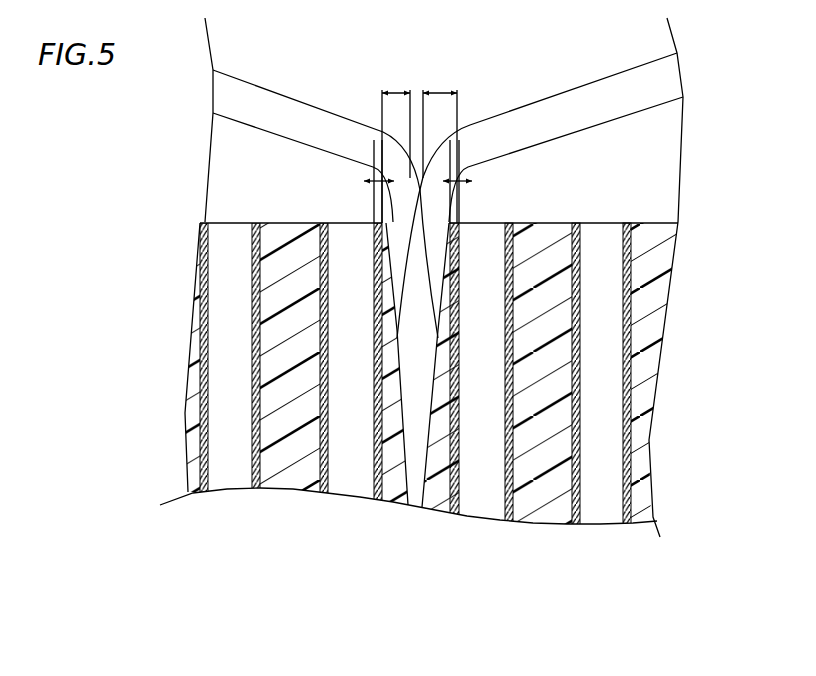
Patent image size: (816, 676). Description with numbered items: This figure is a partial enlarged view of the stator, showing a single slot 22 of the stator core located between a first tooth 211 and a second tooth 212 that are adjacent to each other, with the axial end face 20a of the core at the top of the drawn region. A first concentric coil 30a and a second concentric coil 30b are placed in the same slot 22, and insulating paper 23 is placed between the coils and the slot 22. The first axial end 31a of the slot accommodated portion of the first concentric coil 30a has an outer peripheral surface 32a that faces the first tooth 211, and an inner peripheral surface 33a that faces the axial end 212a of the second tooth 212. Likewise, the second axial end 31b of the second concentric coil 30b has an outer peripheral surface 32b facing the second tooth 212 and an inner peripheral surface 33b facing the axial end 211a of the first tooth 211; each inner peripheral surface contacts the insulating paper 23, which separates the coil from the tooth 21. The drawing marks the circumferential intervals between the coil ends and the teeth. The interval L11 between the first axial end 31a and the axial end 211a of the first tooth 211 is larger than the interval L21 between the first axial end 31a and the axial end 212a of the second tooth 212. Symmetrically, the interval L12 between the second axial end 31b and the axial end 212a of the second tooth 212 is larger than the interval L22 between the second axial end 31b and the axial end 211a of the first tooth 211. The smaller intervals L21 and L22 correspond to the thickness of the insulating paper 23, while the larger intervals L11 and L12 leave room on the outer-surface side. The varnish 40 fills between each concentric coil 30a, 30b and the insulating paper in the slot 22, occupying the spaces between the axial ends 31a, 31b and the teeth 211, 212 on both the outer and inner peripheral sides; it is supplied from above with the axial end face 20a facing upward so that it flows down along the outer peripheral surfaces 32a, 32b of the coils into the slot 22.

The axial end face of stator core 20a is at (605, 221).
The tooth 21 is at (351, 488).
The first tooth 211 is at (296, 378).
The second tooth 212 is at (551, 378).
The axial end of first tooth 211a is at (345, 221).
The axial end of second tooth 212a is at (488, 221).
The slot 22 is at (373, 347).
The insulating paper 23 is at (374, 505).
The first concentric coil 30a is at (540, 177).
The second concentric coil 30b is at (325, 182).
The first axial end 31a is at (443, 220).
The second axial end 31b is at (393, 221).
The outer peripheral surface of first axial end 32a is at (545, 97).
The outer peripheral surface of second axial end 32b is at (300, 100).
The inner peripheral surface of first axial end 33a is at (558, 133).
The inner peripheral surface of second axial end 33b is at (262, 128).
The varnish 40 is at (458, 340).
The interval L11 is at (395, 141).
The interval L12 is at (446, 141).
The interval L21 is at (483, 175).
The interval L22 is at (349, 175).